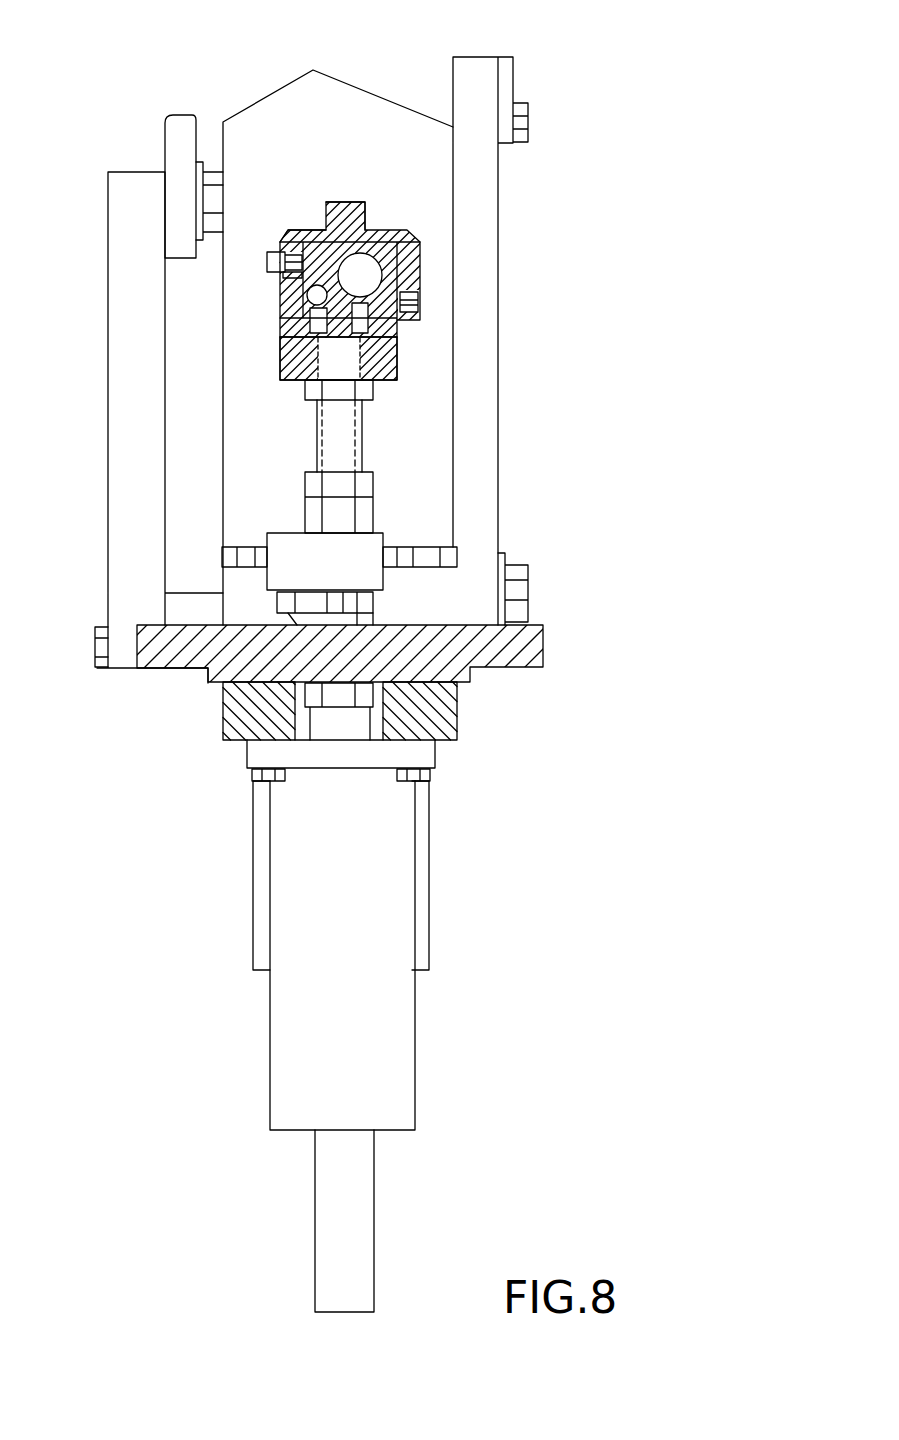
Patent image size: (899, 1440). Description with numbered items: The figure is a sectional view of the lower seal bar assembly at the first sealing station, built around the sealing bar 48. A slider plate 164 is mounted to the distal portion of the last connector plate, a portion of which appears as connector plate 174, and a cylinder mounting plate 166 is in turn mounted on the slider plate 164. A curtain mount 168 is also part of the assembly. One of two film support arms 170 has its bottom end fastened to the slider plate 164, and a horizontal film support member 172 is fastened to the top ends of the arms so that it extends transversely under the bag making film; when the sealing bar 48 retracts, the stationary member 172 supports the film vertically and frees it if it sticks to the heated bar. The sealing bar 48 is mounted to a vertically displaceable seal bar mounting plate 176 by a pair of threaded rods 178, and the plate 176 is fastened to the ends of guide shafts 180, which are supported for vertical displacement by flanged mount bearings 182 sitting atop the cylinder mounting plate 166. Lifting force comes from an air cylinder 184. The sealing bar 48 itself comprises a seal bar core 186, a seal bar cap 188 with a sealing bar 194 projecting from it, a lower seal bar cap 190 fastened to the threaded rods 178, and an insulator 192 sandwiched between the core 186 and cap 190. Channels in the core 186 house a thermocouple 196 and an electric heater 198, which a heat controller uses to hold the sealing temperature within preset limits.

The sealing bar 48 is at (428, 215).
The slider plate 164 is at (545, 638).
The cylinder mounting plate 166 is at (452, 710).
The curtain mount 168 is at (480, 292).
The film support arm 170 is at (118, 430).
The horizontal film support member 172 is at (176, 128).
The connector plate 174 is at (317, 118).
The seal bar mounting plate 176 is at (272, 580).
The threaded rod 178 is at (362, 438).
The guide shaft 180 is at (375, 1223).
The flanged mount bearing 182 is at (415, 1057).
The air cylinder 184 is at (430, 848).
The seal bar core 186 is at (283, 271).
The seal bar cap 188 is at (420, 257).
The seal bar cap 190 is at (398, 358).
The insulator 192 is at (397, 332).
The sealing bar 194 is at (325, 213).
The thermocouple 196 is at (283, 297).
The electric heater 198 is at (385, 242).